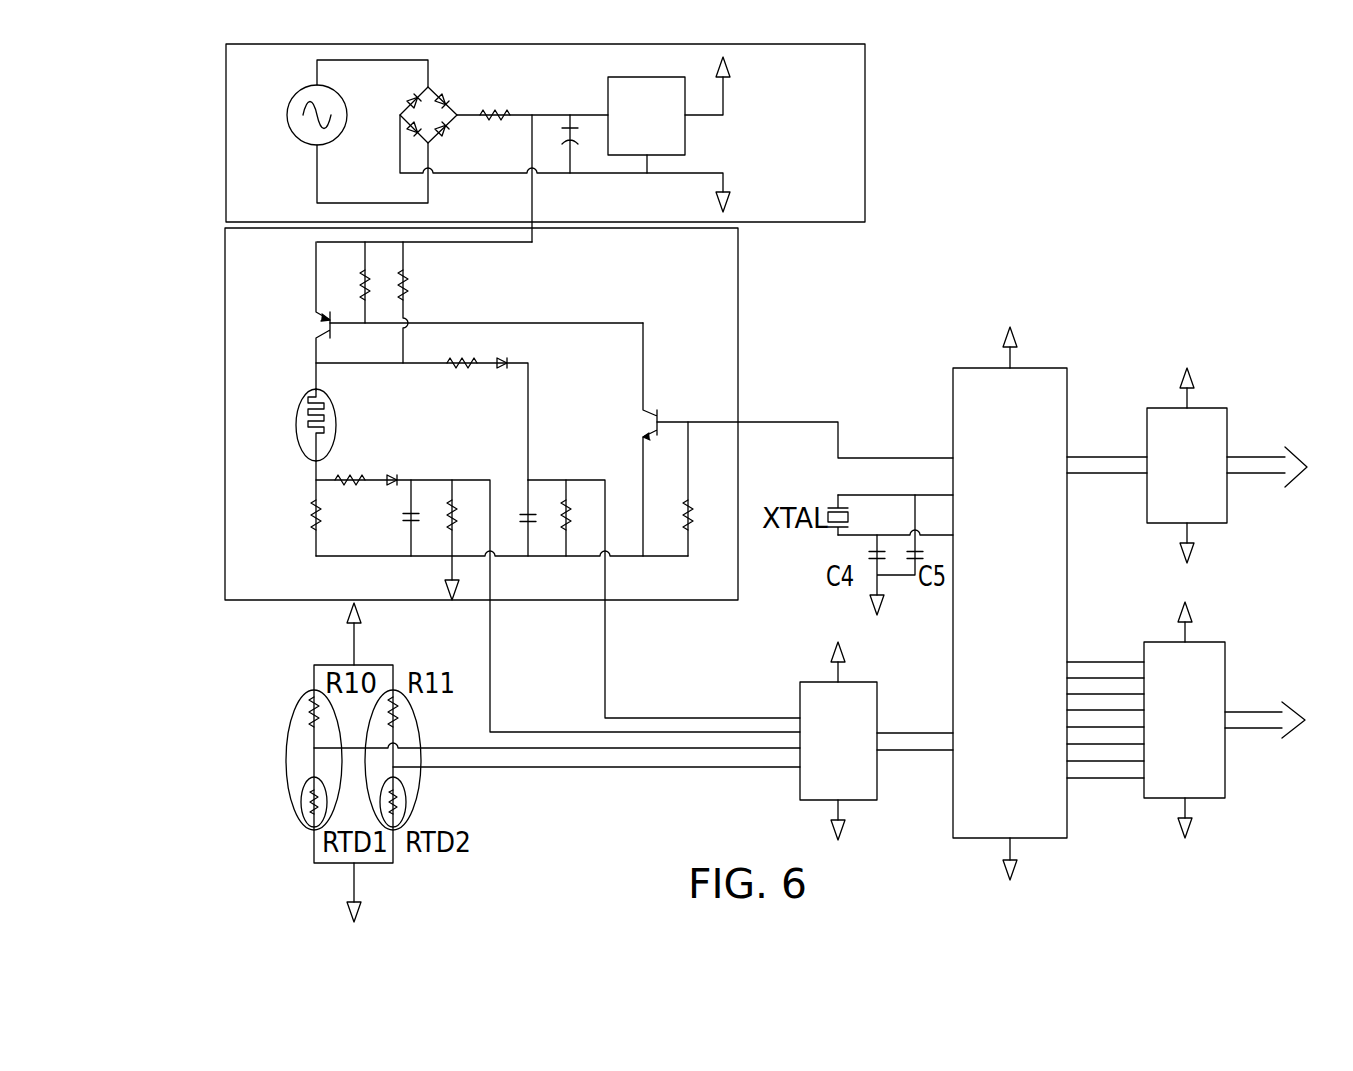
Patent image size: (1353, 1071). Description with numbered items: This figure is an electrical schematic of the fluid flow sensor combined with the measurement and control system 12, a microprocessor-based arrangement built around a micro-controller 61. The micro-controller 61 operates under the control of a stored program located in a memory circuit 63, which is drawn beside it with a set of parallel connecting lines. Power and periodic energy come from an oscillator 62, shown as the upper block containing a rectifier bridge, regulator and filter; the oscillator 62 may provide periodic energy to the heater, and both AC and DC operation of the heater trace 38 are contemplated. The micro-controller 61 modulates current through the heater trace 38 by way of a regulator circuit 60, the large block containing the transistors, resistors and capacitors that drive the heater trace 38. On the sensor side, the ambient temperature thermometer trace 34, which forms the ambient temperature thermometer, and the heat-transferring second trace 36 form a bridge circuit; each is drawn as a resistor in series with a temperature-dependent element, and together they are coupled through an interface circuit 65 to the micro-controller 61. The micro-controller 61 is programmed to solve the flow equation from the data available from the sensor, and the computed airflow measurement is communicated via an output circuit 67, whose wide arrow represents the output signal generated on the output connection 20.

The measurement and control system 12 is at (1085, 333).
The output connection 20 is at (1248, 457).
The first trace 34 is at (420, 727).
The second trace 36 is at (287, 747).
The heater trace 38 is at (296, 416).
The regulator circuit 60 is at (555, 480).
The micro-controller 61 is at (1010, 603).
The oscillator 62 is at (865, 132).
The memory circuit 63 is at (1224, 720).
The interface circuit 65 is at (838, 741).
The output circuit 67 is at (1187, 465).